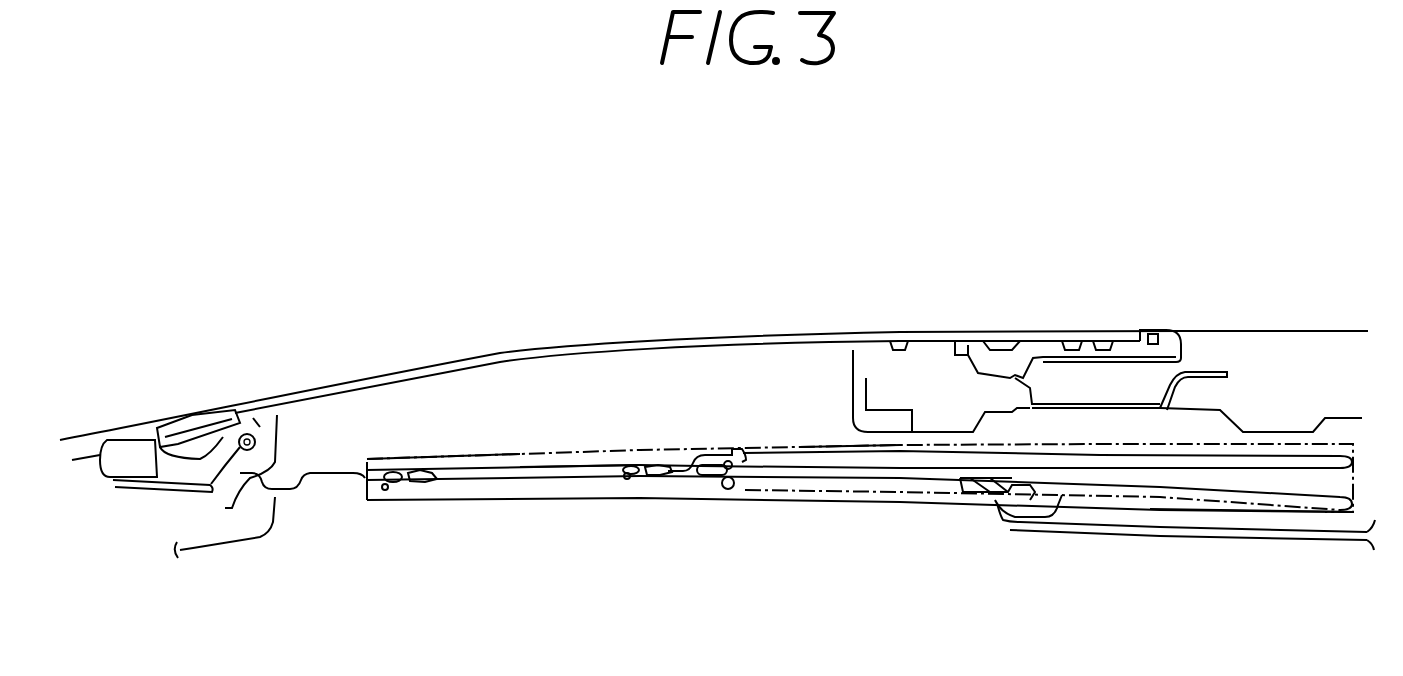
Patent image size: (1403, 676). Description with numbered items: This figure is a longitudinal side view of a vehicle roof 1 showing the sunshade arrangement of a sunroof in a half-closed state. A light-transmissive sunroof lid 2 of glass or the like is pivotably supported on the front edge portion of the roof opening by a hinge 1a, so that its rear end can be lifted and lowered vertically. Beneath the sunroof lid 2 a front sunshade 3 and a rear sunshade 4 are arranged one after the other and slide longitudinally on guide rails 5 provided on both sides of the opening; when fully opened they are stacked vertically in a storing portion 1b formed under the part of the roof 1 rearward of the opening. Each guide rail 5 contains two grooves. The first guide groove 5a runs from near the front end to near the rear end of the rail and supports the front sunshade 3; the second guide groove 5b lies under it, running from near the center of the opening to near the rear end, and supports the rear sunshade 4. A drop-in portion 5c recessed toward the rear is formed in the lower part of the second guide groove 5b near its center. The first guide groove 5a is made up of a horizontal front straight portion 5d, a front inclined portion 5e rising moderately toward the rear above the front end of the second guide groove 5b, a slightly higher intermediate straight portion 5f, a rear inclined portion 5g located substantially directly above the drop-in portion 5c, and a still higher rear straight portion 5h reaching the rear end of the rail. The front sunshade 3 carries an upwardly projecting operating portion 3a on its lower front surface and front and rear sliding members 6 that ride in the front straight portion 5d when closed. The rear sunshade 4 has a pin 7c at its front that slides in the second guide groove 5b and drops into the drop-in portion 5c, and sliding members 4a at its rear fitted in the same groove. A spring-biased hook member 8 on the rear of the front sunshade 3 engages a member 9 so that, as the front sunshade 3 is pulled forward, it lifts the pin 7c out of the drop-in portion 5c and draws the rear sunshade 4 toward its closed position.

The roof 1 is at (1197, 331).
The hinge 1a is at (243, 433).
The storing portion 1b is at (1105, 531).
The sunroof lid 2 is at (581, 345).
The front sunshade 3 is at (457, 483).
The operating portion 3a is at (322, 496).
The rear sunshade 4 is at (808, 499).
The sliding members 4a is at (973, 493).
The guide rail 5 is at (1147, 488).
The first guide groove 5a is at (567, 468).
The second guide groove 5b is at (1212, 498).
The drop-in portion 5c is at (1047, 520).
The front straight portion 5d is at (520, 465).
The front inclined portion 5e is at (707, 452).
The intermediate straight portion 5f is at (845, 447).
The rear inclined portion 5g is at (1018, 453).
The rear straight portion 5h is at (1247, 460).
The sliding members 6 is at (390, 485).
The pin 7c is at (728, 490).
The hook member 8 is at (725, 449).
The member for engagement 9 is at (722, 483).